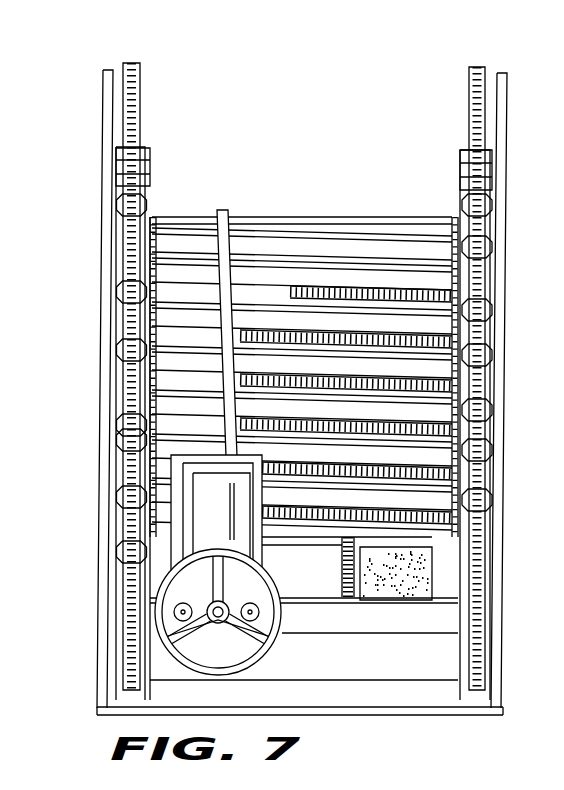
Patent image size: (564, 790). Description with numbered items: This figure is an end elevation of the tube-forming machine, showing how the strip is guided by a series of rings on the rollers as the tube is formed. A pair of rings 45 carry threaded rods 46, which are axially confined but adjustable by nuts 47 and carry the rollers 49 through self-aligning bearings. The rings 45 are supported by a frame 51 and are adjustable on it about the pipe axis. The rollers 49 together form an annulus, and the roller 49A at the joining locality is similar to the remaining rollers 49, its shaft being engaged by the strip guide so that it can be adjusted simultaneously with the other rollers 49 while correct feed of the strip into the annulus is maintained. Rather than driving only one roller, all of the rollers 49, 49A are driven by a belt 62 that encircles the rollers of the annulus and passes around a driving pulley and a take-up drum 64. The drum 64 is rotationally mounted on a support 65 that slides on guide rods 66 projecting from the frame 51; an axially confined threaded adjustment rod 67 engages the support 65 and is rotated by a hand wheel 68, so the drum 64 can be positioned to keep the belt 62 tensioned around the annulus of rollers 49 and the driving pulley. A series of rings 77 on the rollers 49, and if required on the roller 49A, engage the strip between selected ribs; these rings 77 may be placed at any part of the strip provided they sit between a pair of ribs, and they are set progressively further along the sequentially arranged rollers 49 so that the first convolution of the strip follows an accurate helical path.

The ring 45 is at (125, 392).
The rod 46 is at (143, 106).
The nut 47 is at (487, 246).
The roller 49 is at (200, 277).
The roller at the joining locality 49A is at (482, 548).
The frame 51 is at (104, 140).
The belt 62 is at (229, 208).
The take-up drum 64 is at (225, 538).
The support 65 is at (138, 546).
The guide rod 66 is at (252, 620).
The threaded adjustment rod 67 is at (217, 623).
The hand wheel 68 is at (278, 592).
The ring 77 is at (385, 265).